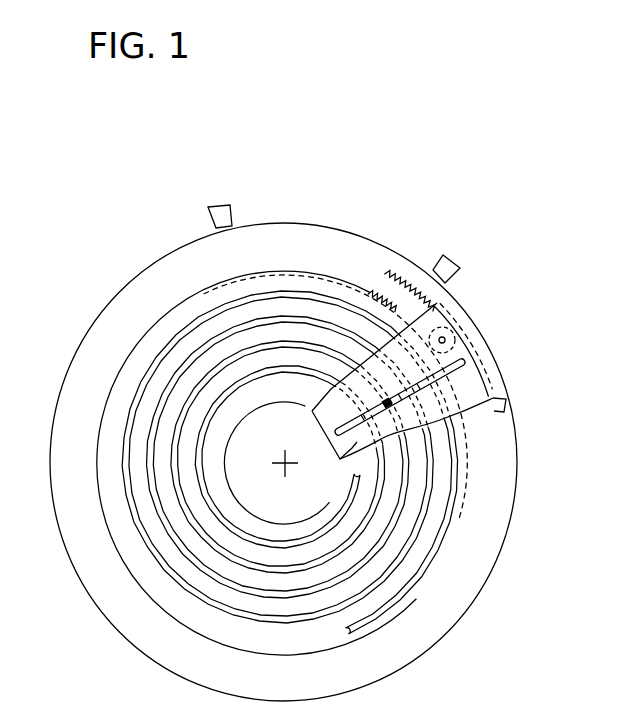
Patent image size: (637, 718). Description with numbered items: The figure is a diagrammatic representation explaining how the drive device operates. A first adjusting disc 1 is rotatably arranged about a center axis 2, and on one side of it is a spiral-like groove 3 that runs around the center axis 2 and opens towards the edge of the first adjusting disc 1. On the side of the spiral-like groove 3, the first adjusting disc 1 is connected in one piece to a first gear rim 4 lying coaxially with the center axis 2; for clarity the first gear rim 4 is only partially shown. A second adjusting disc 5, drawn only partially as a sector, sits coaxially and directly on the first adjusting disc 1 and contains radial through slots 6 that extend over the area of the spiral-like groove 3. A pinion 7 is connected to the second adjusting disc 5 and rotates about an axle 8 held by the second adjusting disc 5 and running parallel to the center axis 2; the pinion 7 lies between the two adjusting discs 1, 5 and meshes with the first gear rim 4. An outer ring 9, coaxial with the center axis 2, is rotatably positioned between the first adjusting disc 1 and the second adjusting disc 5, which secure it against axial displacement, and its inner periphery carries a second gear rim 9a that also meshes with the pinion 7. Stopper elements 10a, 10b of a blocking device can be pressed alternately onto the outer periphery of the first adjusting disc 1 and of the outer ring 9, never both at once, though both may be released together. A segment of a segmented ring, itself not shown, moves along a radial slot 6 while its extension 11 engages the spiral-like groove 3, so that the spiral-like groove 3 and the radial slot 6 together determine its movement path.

The first adjusting disc 1 is at (92, 345).
The center axis 2 is at (284, 466).
The spiral-like groove 3 is at (437, 547).
The first gear rim 4 is at (370, 292).
The second adjusting disc 5 is at (443, 426).
The radial slots 6 is at (337, 441).
The pinion 7 is at (462, 350).
The axle 8 is at (446, 338).
The outer ring 9 is at (507, 404).
The second gear rim 9a is at (384, 274).
The stopper element 10a is at (222, 206).
The stopper element 10b is at (447, 262).
The extension 11 is at (307, 404).